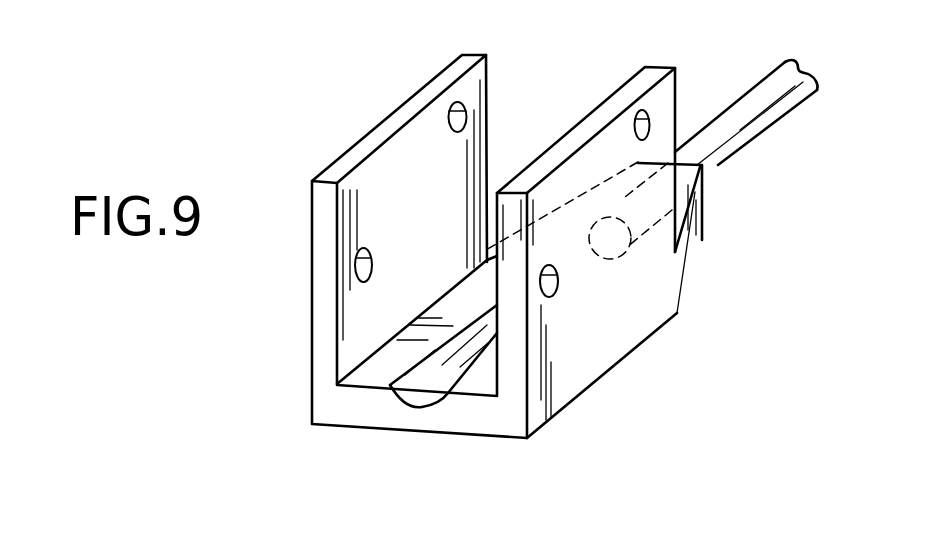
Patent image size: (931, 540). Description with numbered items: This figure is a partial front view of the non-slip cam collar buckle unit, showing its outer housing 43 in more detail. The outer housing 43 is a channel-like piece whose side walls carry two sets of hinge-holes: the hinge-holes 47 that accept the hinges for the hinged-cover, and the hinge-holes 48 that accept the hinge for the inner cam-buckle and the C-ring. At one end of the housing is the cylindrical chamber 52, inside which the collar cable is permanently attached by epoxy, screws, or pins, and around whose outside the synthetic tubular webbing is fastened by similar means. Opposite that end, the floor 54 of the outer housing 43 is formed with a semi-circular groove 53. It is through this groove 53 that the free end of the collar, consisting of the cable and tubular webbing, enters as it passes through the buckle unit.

The outer housing 43 is at (655, 272).
The hinge-holes for the hinged-cover 47 is at (457, 105).
The hinge-holes for the inner cam-buckle and C-ring 48 is at (362, 270).
The cylindrical chamber 52 is at (702, 167).
The semi-circular groove 53 is at (422, 405).
The floor 54 is at (467, 420).